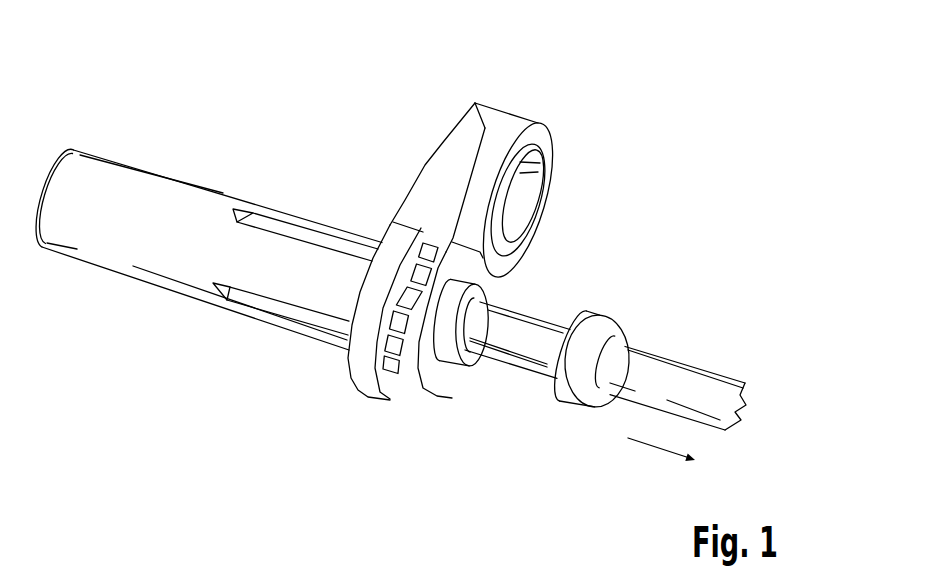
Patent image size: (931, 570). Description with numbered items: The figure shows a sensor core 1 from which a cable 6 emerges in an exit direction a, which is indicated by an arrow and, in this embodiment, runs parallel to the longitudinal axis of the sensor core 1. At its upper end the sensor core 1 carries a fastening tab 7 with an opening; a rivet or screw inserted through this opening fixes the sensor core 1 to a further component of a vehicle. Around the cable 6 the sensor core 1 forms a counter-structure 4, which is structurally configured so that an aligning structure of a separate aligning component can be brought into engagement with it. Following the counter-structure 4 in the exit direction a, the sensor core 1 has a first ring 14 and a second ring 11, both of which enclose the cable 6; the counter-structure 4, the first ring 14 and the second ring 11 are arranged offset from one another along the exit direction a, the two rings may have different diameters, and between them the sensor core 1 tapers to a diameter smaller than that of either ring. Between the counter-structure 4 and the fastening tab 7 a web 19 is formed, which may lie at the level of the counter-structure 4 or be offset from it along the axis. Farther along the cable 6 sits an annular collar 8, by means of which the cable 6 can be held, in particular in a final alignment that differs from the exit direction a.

The sensor core 1 is at (391, 267).
The counter-structure 4 is at (400, 345).
The cable 6 is at (672, 372).
The fastening tab 7 is at (500, 127).
The annular collar 8 is at (591, 383).
The second ring 11 is at (462, 366).
The first ring 14 is at (445, 263).
The web 19 is at (500, 237).
The exit direction a is at (661, 464).